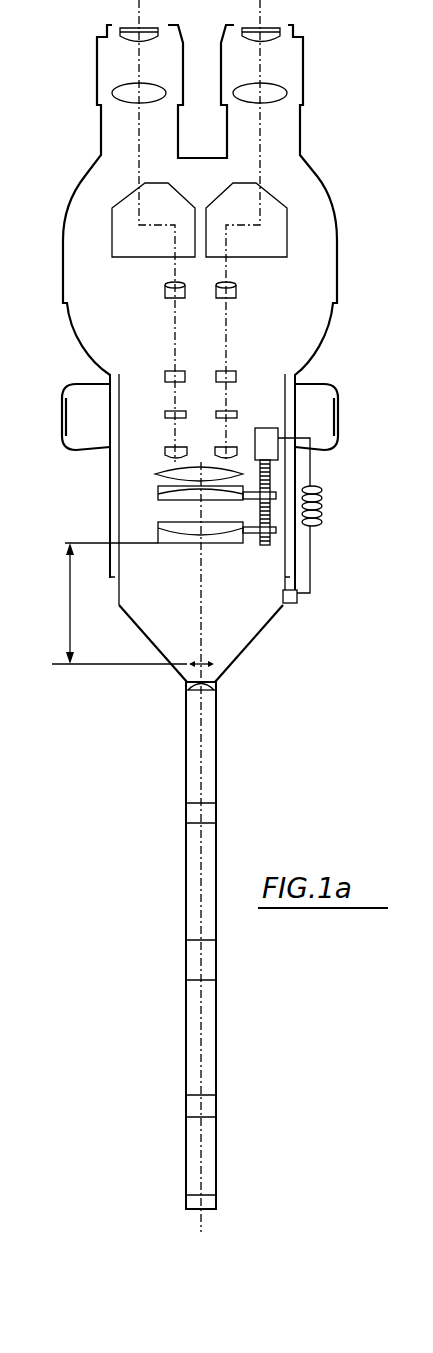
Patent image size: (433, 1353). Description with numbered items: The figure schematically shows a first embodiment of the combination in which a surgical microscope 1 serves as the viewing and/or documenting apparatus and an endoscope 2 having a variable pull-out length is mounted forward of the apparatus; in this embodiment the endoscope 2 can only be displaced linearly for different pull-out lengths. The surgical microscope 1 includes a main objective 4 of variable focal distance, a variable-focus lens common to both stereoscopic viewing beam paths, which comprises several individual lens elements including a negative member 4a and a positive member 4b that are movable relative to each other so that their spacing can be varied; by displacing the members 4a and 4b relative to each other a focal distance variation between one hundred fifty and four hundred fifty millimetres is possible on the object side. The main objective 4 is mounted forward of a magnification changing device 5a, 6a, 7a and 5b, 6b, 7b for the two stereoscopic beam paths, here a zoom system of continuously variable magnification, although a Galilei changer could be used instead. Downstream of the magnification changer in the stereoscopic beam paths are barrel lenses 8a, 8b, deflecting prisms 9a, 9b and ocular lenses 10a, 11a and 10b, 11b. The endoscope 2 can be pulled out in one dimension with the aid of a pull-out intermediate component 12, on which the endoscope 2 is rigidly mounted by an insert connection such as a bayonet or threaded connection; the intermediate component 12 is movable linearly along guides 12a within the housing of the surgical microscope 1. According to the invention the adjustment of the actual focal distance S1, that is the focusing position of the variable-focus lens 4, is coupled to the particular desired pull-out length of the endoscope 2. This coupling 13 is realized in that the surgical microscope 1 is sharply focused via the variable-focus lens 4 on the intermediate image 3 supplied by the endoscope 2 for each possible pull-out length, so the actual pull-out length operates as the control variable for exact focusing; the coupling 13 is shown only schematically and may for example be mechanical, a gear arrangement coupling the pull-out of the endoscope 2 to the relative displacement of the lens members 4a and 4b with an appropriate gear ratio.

The surgical microscope 1 is at (339, 342).
The endoscope 2 is at (158, 912).
The intermediate image 3 is at (205, 655).
The main objective 4 is at (150, 486).
The negative member 4a is at (158, 532).
The positive member 4b is at (158, 494).
The magnification changing device element 5a is at (238, 377).
The magnification changing device element 5b is at (165, 375).
The magnification changing device element 6a is at (238, 413).
The magnification changing device element 6b is at (165, 413).
The magnification changing device element 7a is at (237, 449).
The magnification changing device element 7b is at (165, 451).
The barrel lens 8a is at (238, 296).
The barrel lens 8b is at (163, 294).
The deflecting prism 9a is at (268, 230).
The deflecting prism 9b is at (122, 230).
The ocular lens 10a is at (270, 95).
The ocular lens 10b is at (132, 90).
The ocular lens 11a is at (270, 36).
The ocular lens 11b is at (130, 41).
The pull-out intermediate component 12 is at (240, 630).
The guides 12a is at (118, 603).
The coupling 13 is at (323, 510).
The actual focal distance S1 is at (119, 603).